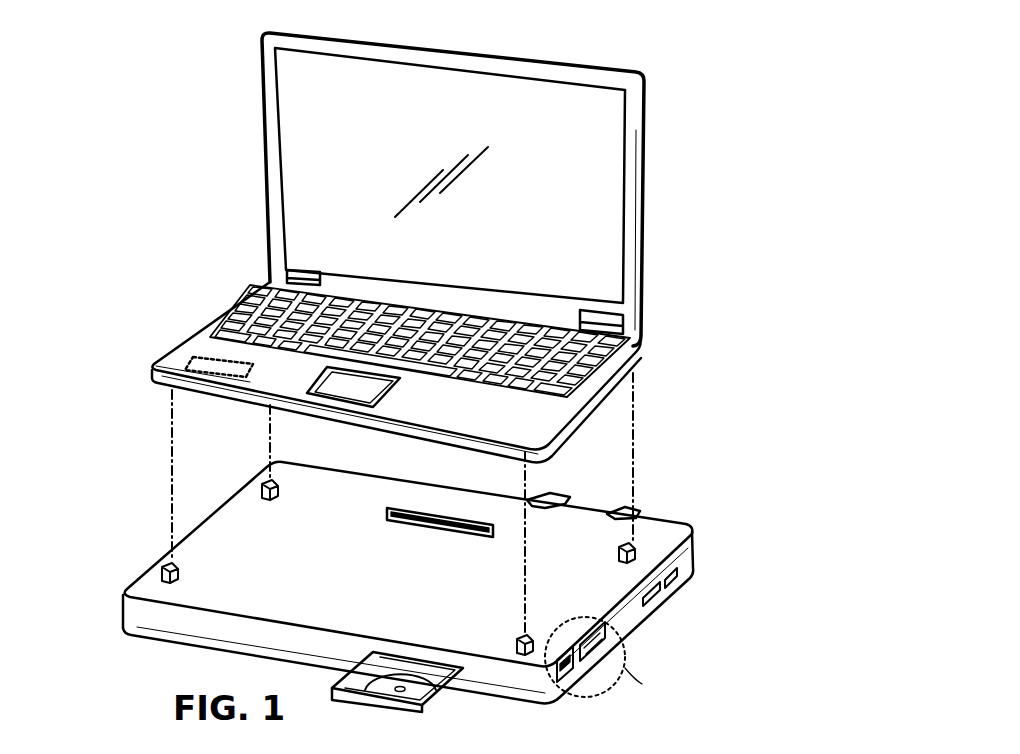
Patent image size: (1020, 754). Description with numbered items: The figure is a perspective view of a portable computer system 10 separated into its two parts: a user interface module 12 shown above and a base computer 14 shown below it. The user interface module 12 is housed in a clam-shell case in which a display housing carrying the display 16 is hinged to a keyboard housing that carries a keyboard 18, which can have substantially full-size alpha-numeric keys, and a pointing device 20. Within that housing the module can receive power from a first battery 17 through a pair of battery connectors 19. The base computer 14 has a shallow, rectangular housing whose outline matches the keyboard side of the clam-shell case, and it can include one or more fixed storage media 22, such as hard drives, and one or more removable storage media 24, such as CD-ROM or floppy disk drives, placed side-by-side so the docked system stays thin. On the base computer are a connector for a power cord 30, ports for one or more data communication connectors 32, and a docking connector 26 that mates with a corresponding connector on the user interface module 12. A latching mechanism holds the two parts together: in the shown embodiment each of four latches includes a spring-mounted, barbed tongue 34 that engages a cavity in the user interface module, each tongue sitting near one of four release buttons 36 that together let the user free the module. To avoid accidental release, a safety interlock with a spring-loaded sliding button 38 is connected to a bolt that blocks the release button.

The portable computer system 10 is at (146, 33).
The user interface module 12 is at (652, 161).
The base computer 14 is at (699, 637).
The display 16 is at (292, 112).
The first battery 17 is at (200, 356).
The keyboard 18 is at (262, 313).
The battery connectors 19 is at (183, 366).
The pointing device 20 is at (383, 388).
The fixed storage media 22 is at (125, 612).
The removable storage media 24 is at (425, 705).
The docking connector 26 is at (390, 514).
The connector for a power cord 30 is at (632, 510).
The data communication connectors 32 is at (555, 500).
The barbed tongue 34 is at (525, 644).
The release buttons 36 is at (573, 680).
The spring-loaded sliding button 38 is at (607, 636).